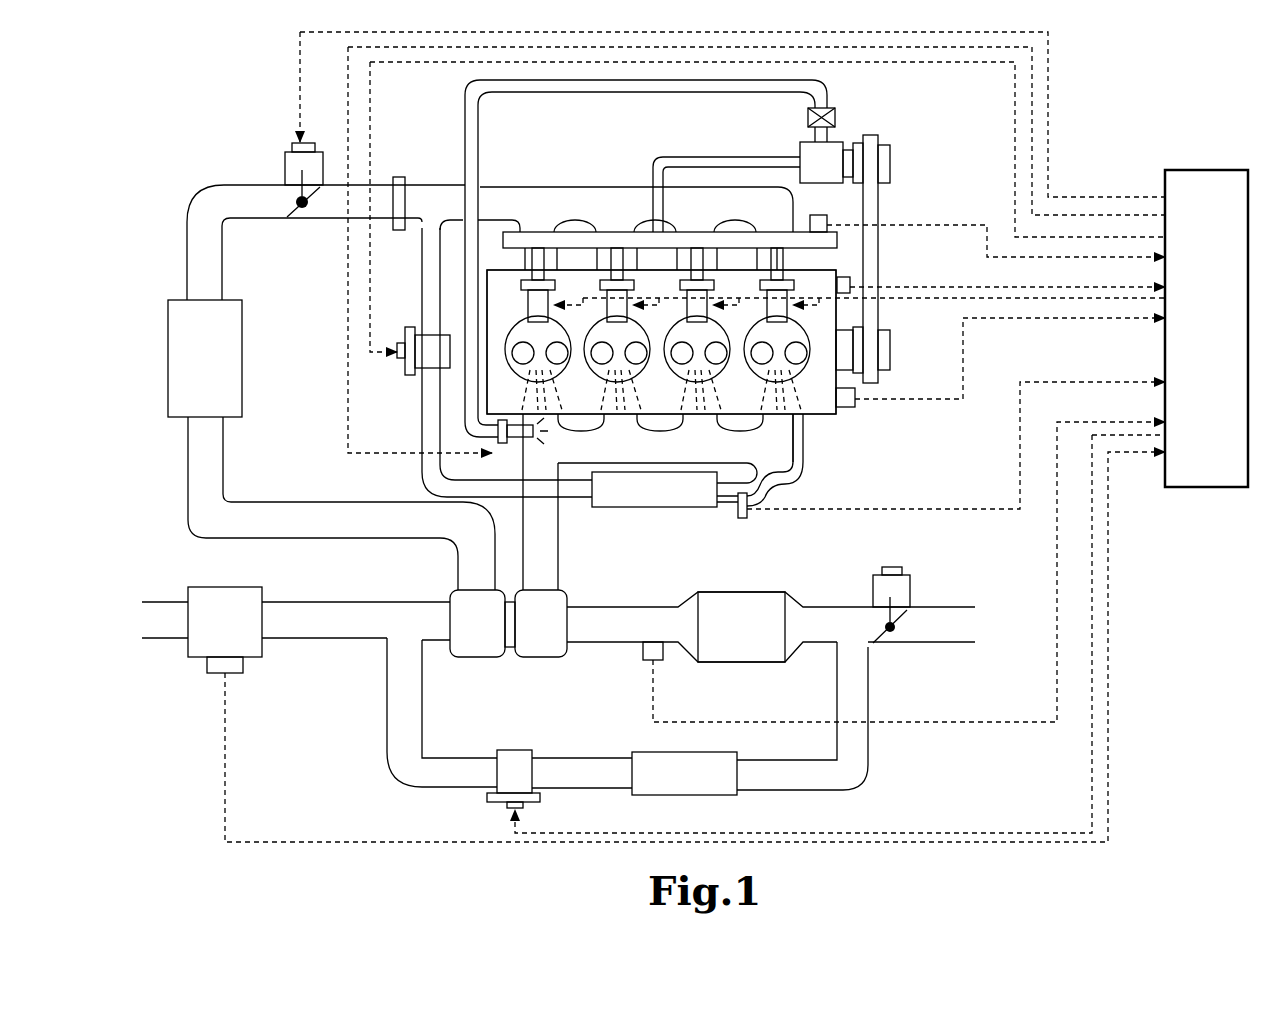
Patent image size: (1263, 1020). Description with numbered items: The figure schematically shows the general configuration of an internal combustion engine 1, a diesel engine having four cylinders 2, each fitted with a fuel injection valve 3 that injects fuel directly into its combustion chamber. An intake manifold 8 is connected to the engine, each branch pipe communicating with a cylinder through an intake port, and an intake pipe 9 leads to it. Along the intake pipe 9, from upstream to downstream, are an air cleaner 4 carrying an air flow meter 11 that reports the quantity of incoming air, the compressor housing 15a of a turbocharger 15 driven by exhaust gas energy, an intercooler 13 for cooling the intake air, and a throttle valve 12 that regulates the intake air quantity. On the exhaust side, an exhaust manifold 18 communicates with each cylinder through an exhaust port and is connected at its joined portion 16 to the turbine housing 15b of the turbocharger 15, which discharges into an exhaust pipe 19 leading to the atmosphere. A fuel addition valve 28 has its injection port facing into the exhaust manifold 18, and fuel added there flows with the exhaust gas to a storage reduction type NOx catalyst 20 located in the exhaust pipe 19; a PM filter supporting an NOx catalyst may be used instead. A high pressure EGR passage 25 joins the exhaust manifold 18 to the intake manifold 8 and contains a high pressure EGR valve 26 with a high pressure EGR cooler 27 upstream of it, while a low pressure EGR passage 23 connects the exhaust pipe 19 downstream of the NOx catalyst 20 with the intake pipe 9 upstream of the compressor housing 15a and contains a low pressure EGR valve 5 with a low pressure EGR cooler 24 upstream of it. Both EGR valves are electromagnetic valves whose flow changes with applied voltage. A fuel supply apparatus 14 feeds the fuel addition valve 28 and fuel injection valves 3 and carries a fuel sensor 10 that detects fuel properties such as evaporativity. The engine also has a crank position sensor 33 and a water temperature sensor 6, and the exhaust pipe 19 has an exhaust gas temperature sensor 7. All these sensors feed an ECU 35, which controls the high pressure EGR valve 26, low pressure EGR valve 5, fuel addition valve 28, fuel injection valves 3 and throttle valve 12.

The internal combustion engine 1 is at (856, 436).
The cylinders 2 is at (661, 325).
The fuel injection valves 3 is at (530, 310).
The air cleaner 4 is at (262, 660).
The low pressure EGR valve 5 is at (487, 798).
The water temperature sensor 6 is at (843, 277).
The exhaust gas temperature sensor 7 is at (643, 656).
The intake manifold 8 is at (560, 187).
The intake pipe 9 is at (187, 248).
The fuel sensor 10 is at (822, 215).
The air flow meter 11 is at (207, 670).
The throttle valve 12 is at (285, 165).
The intercooler 13 is at (168, 355).
The fuel supply apparatus 14 is at (729, 153).
The turbocharger 15 is at (508, 670).
The compressor housing 15a is at (472, 658).
The turbine housing 15b is at (541, 650).
The joined portion 16 is at (560, 527).
The exhaust manifold 18 is at (796, 438).
The exhaust pipe 19 is at (612, 606).
The NOx catalyst 20 is at (718, 662).
The low pressure EGR passage 23 is at (870, 752).
The low pressure EGR cooler 24 is at (668, 795).
The high pressure EGR passage 25 is at (423, 420).
The high pressure EGR valve 26 is at (405, 368).
The high pressure EGR cooler 27 is at (660, 507).
The fuel addition valve 28 is at (515, 438).
The crank position sensor 33 is at (856, 404).
The ECU 35 is at (1190, 488).